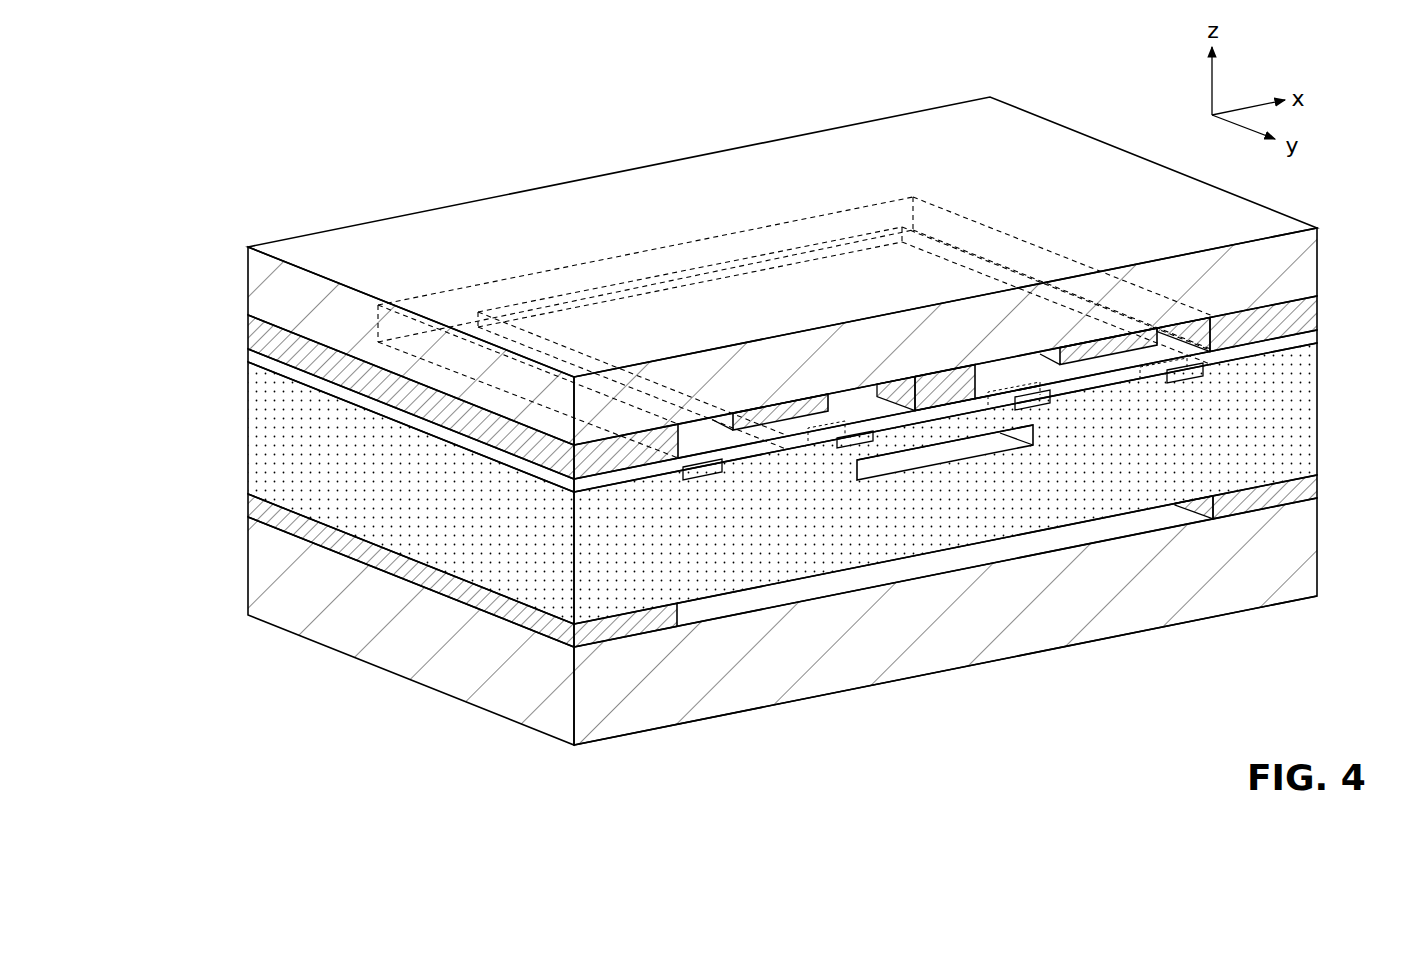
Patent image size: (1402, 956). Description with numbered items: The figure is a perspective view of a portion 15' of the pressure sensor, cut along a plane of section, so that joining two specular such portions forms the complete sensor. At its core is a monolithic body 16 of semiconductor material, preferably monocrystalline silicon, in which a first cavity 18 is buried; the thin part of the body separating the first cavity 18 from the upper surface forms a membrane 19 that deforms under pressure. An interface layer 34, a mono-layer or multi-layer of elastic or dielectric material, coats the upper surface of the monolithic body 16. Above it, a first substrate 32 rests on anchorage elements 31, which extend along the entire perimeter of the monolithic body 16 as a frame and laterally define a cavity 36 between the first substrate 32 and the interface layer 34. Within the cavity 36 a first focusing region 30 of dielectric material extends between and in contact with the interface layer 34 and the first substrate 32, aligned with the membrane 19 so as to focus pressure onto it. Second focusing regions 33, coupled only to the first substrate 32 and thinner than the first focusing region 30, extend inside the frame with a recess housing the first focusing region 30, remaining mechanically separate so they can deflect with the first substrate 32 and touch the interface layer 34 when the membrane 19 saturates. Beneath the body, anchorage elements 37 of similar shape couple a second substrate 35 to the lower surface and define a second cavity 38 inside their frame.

The portion of the pressure sensor 15' is at (782, 234).
The first substrate 32 is at (268, 290).
The anchorage elements 31 is at (248, 336).
The interface layer 34 is at (248, 353).
The monolithic body 16 is at (258, 440).
The anchorage elements 37 is at (250, 513).
The second substrate 35 is at (262, 577).
The second focusing regions 33 is at (766, 410).
The first focusing region 30 is at (928, 375).
The cavity 36 is at (1000, 368).
The first cavity 18 is at (952, 452).
The membrane 19 is at (912, 438).
The second cavity 38 is at (1036, 542).